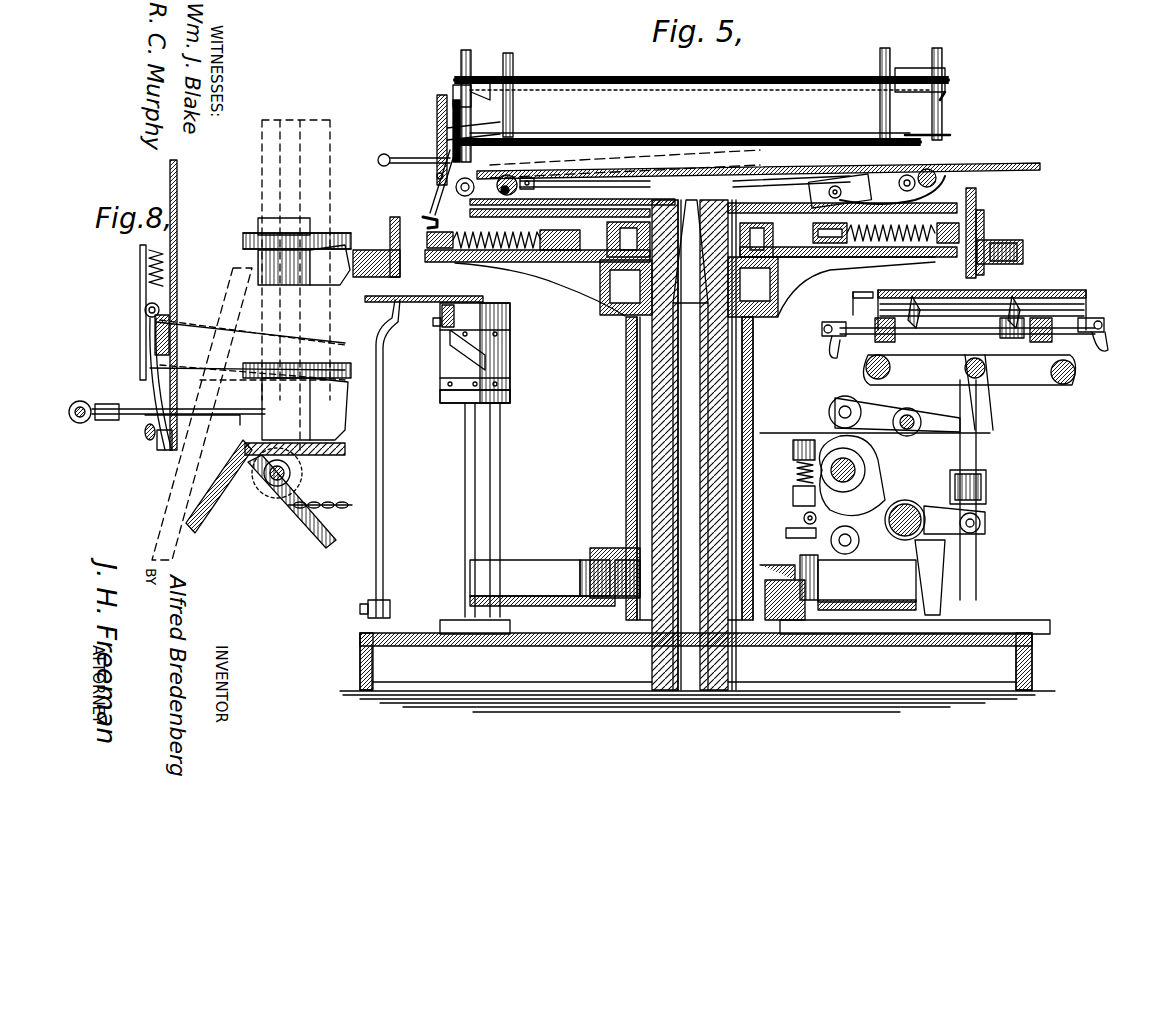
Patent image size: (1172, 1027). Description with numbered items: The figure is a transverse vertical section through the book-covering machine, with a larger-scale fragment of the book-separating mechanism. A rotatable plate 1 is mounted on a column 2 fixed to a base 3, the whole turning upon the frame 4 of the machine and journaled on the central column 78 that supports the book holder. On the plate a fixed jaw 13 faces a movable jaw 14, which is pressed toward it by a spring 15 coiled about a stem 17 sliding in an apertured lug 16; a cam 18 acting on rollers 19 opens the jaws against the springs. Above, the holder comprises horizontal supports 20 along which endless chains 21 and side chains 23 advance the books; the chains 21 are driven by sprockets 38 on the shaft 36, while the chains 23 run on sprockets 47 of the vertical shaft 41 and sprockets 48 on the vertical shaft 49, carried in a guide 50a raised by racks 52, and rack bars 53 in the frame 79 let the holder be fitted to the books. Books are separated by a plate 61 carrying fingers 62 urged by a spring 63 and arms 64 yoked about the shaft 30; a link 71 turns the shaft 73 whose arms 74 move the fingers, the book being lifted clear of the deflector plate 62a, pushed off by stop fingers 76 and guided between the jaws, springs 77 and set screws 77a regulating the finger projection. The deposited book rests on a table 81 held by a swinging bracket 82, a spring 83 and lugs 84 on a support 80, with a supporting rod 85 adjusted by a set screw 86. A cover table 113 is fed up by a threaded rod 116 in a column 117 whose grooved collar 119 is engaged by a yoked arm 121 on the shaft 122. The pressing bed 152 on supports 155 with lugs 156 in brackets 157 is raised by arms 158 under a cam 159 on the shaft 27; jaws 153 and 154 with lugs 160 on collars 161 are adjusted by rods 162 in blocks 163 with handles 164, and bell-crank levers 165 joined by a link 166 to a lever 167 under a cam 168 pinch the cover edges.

In FIG. 5, the plate 1 is at (1000, 240).
In FIG. 5, the column 2 is at (626, 342).
In FIG. 5, the base 3 is at (596, 560).
In FIG. 5, the frame 4 is at (1032, 640).
In FIG. 5, the jaw 13 is at (392, 224).
In FIG. 5, the movable jaw 14 is at (428, 210).
In FIG. 5, the spring 15 is at (475, 236).
In FIG. 5, the apertured lug 16 is at (813, 232).
In FIG. 5, the stem 17 is at (607, 240).
In FIG. 5, the cam 18 is at (590, 268).
In FIG. 5, the roller 19 is at (689, 287).
In FIG. 5, the support 20 is at (965, 178).
In FIG. 8, the endless chain 21 is at (328, 504).
In FIG. 5, the endless chain 21 is at (685, 186).
In FIG. 8, the chain 23 is at (330, 232).
In FIG. 5, the chain 23 is at (820, 80).
In FIG. 5, the shaft 27 is at (860, 472).
In FIG. 5, the shaft 30 is at (838, 186).
In FIG. 8, the shaft 36 is at (274, 481).
In FIG. 5, the shaft 36 is at (456, 190).
In FIG. 8, the sprocket 38 is at (302, 470).
In FIG. 5, the vertical shaft 41 is at (470, 50).
In FIG. 8, the sprocket 47 is at (258, 230).
In FIG. 5, the sprocket 47 is at (455, 90).
In FIG. 5, the sprocket 48 is at (948, 135).
In FIG. 5, the post 49 is at (944, 58).
In FIG. 5, the guide 50a is at (765, 78).
In FIG. 5, the rack 52 is at (513, 58).
In FIG. 5, the rack bar 53 is at (518, 178).
In FIG. 8, the plate 61 is at (178, 226).
In FIG. 8, the finger 62 is at (165, 452).
In FIG. 8, the deflector plate 62a is at (186, 522).
In FIG. 5, the deflector plate 62a is at (436, 180).
In FIG. 8, the spring 63 is at (146, 268).
In FIG. 8, the arm 64 is at (180, 318).
In FIG. 5, the arm 64 is at (500, 128).
In FIG. 5, the link 71 is at (572, 178).
In FIG. 5, the shaft 73 is at (514, 194).
In FIG. 5, the arm 74 is at (520, 186).
In FIG. 8, the stop finger 76 is at (135, 409).
In FIG. 5, the stop finger 76 is at (410, 155).
In FIG. 8, the spring 77 is at (172, 404).
In FIG. 8, the set screw 77a is at (145, 436).
In FIG. 5, the central column 78 is at (716, 640).
In FIG. 5, the frame 79 is at (905, 200).
In FIG. 5, the support 80 is at (440, 335).
In FIG. 5, the table 81 is at (370, 296).
In FIG. 5, the swinging bracket 82 is at (447, 306).
In FIG. 5, the spring 83 is at (433, 322).
In FIG. 5, the lug 84 is at (440, 380).
In FIG. 5, the supporting rod 85 is at (385, 443).
In FIG. 5, the set screw 86 is at (390, 604).
In FIG. 5, the table 113 is at (786, 432).
In FIG. 5, the screw-threaded rod 116 is at (795, 458).
In FIG. 5, the column 117 is at (795, 480).
In FIG. 5, the grooved collar 119 is at (795, 496).
In FIG. 5, the yoked arm 121 is at (790, 530).
In FIG. 5, the shaft 122 is at (892, 555).
In FIG. 5, the bed 152 is at (1000, 290).
In FIG. 5, the jaw 153 is at (1020, 300).
In FIG. 5, the jaw 154 is at (855, 292).
In FIG. 5, the support 155 is at (978, 450).
In FIG. 5, the lug 156 is at (986, 484).
In FIG. 5, the bracket 157 is at (940, 566).
In FIG. 5, the arm 158 is at (982, 524).
In FIG. 5, the cam 159 is at (878, 488).
In FIG. 5, the lug 160 is at (1085, 296).
In FIG. 5, the collar 161 is at (914, 330).
In FIG. 5, the rod 162 is at (880, 345).
In FIG. 5, the block 163 is at (1030, 340).
In FIG. 5, the handle 164 is at (833, 350).
In FIG. 5, the bell-crank lever 165 is at (1055, 380).
In FIG. 5, the link 166 is at (970, 396).
In FIG. 5, the lever 167 is at (870, 415).
In FIG. 5, the cam 168 is at (838, 400).